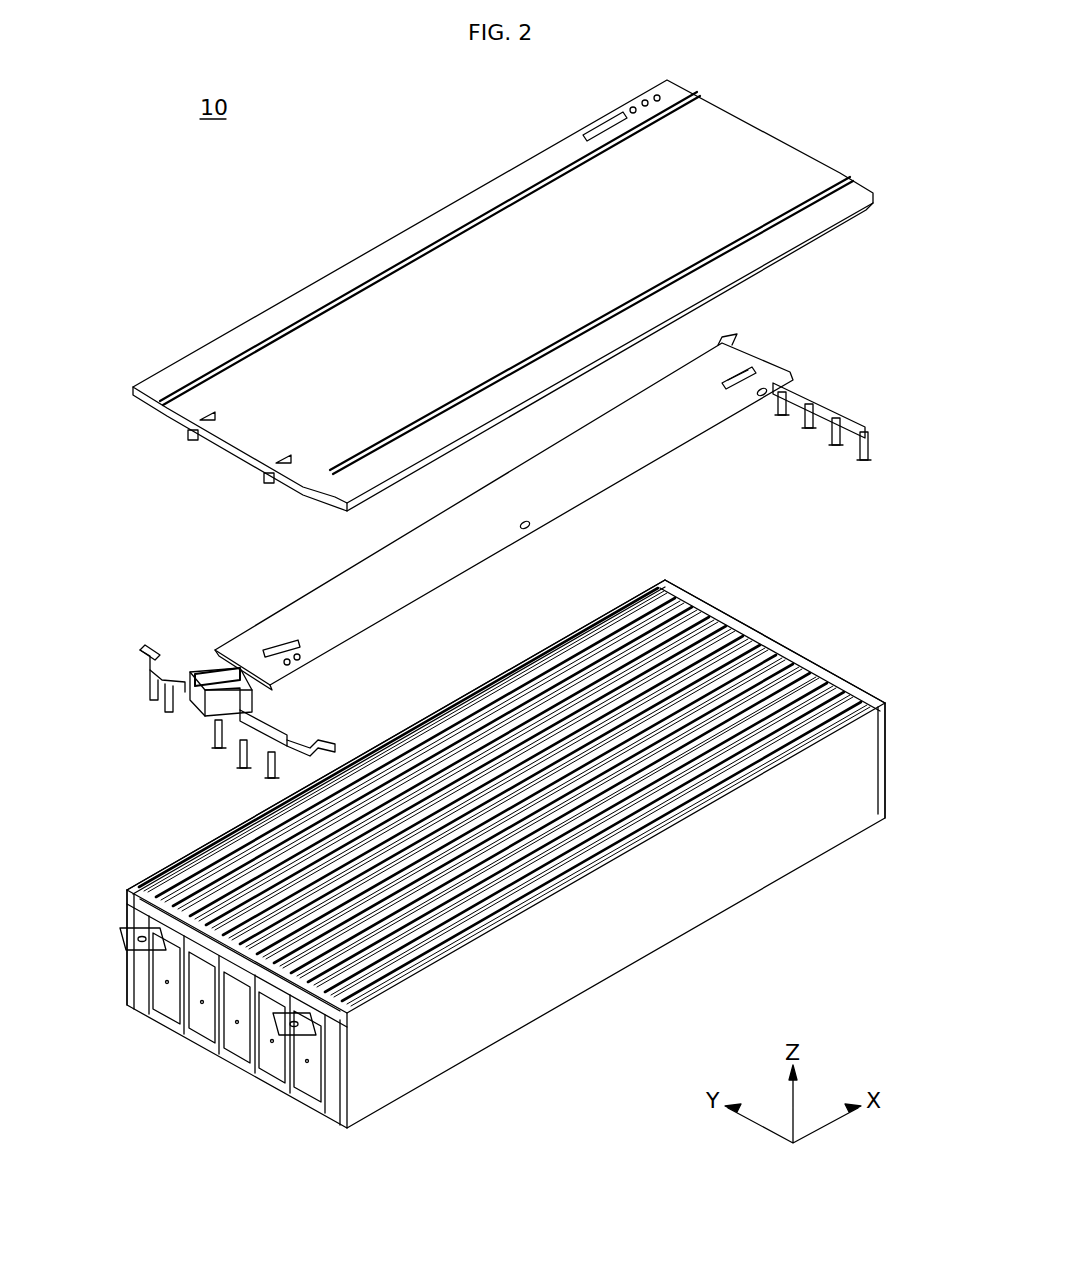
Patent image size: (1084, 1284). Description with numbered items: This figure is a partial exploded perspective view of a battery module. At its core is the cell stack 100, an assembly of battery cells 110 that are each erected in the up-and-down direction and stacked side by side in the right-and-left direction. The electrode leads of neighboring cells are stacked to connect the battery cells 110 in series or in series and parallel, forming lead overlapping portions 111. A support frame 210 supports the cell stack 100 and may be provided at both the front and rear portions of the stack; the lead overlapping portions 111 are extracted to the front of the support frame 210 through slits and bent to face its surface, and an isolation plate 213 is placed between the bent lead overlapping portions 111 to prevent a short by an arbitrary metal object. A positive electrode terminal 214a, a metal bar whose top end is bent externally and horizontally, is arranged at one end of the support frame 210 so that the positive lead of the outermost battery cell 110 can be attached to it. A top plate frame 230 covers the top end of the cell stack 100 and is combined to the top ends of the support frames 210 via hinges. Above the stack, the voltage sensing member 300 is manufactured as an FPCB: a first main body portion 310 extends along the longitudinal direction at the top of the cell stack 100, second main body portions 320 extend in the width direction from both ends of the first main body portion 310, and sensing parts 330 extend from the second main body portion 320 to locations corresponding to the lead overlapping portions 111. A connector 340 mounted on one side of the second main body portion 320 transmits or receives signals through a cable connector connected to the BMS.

The cell stack 100 is at (502, 854).
The battery cell 110 is at (205, 868).
The lead overlapping portion 111 is at (196, 1042).
The support frame 210 is at (502, 914).
The isolation plate 213 is at (232, 1078).
The positive electrode terminal 214a is at (184, 977).
The top plate frame 230 is at (393, 252).
The voltage sensing member 300 is at (517, 549).
The first main body portion 310 is at (548, 507).
The second main body portion 320 is at (842, 428).
The sensing part 330 is at (806, 420).
The connector 340 is at (212, 668).